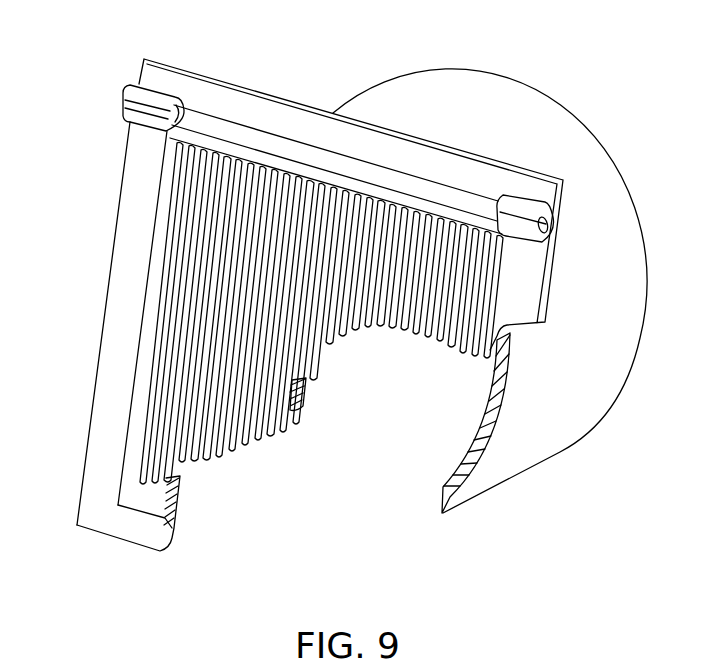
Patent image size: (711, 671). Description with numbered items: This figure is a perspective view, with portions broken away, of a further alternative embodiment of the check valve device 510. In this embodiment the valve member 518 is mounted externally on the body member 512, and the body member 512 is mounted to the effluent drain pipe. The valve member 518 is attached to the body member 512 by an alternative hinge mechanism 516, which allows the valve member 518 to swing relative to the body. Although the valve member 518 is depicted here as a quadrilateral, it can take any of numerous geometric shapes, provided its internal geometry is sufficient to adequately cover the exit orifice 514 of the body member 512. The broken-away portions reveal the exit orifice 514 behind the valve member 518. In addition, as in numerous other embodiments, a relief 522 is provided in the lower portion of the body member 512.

The check valve device 510 is at (607, 92).
The body member 512 is at (393, 92).
The exit orifice 514 is at (369, 487).
The hinge mechanism 516 is at (124, 88).
The valve member 518 is at (104, 325).
The relief 522 is at (243, 498).